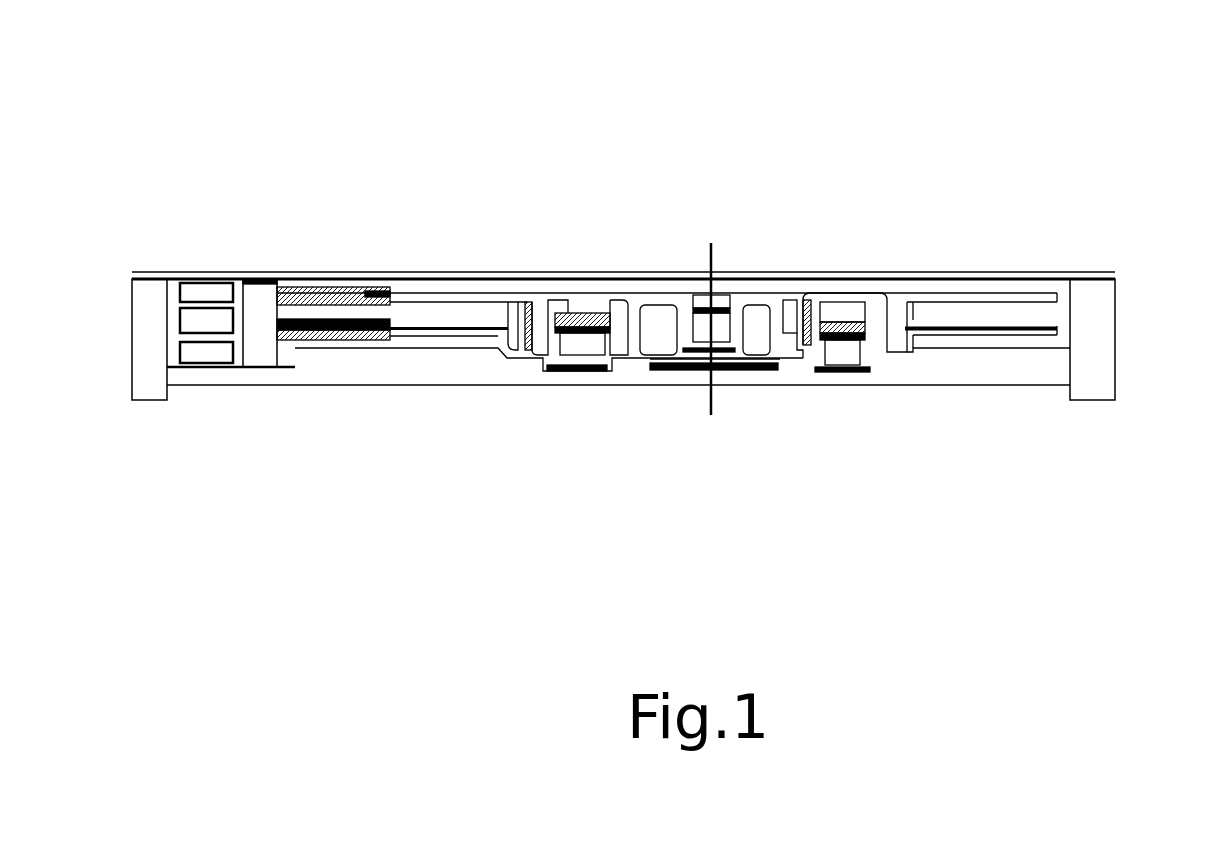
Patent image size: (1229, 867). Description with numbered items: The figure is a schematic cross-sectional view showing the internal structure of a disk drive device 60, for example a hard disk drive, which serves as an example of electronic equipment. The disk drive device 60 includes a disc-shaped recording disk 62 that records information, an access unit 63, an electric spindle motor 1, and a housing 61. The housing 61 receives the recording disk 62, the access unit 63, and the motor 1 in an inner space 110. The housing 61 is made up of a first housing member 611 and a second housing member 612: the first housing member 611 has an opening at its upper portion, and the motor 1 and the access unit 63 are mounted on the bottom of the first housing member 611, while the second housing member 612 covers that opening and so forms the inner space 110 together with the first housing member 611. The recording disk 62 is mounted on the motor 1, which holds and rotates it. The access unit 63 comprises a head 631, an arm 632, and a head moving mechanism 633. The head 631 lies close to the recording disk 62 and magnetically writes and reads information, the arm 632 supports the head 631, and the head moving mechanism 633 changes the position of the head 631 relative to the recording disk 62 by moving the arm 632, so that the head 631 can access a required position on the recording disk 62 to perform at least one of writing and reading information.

The disk drive device 60 is at (226, 72).
The housing 61 is at (668, 441).
The first housing member 611 is at (965, 368).
The second housing member 612 is at (1120, 243).
The recording disk 62 is at (943, 293).
The access unit 63 is at (342, 440).
The head 631 is at (383, 335).
The arm 632 is at (343, 338).
The head moving mechanism 633 is at (253, 345).
The inner space 110 is at (1021, 322).
The electric spindle motor 1 is at (697, 403).